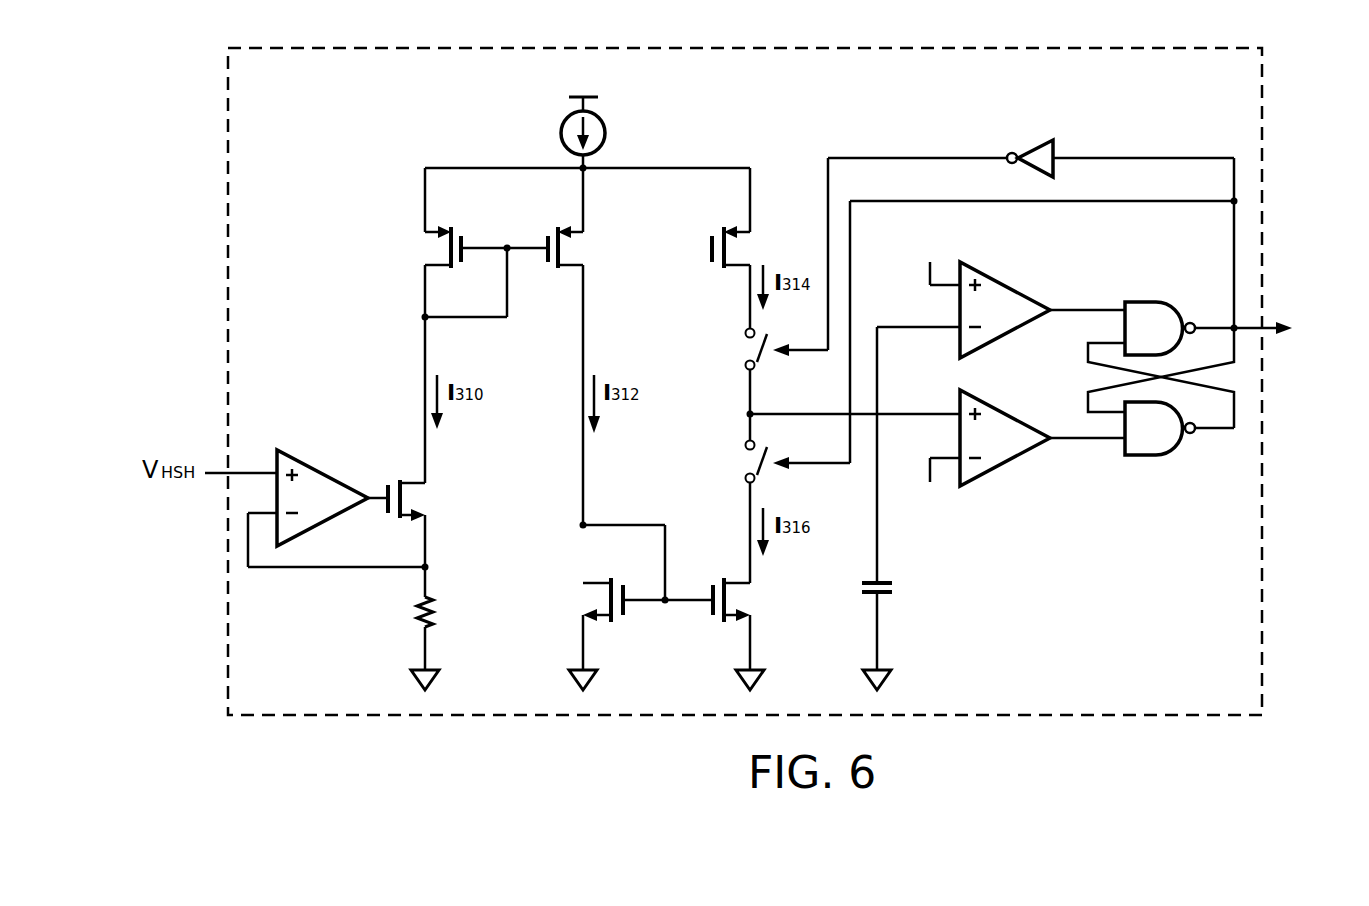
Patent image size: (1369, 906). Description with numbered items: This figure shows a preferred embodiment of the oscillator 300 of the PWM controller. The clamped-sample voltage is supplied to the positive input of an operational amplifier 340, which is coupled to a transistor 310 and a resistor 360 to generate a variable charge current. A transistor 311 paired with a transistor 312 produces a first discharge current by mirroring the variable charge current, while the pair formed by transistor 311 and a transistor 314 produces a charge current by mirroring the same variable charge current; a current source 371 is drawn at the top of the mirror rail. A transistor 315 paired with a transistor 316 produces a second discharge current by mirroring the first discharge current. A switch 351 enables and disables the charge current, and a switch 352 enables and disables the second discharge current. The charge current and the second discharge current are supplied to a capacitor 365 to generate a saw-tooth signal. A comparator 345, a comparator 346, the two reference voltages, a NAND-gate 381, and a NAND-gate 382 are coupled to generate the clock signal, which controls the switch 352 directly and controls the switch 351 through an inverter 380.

The oscillator 300 is at (1262, 120).
The transistor 310 is at (430, 497).
The transistor 311 is at (420, 250).
The transistor 312 is at (553, 272).
The transistor 314 is at (708, 272).
The transistor 315 is at (573, 607).
The transistor 316 is at (720, 623).
The operational amplifier 340 is at (313, 455).
The comparator 345 is at (1037, 264).
The comparator 346 is at (988, 482).
The switch 351 is at (742, 348).
The switch 352 is at (732, 456).
The resistor 360 is at (407, 610).
The capacitor 365 is at (898, 589).
The current source 371 is at (607, 133).
The inverter 380 is at (1033, 140).
The NAND-gate 381 is at (1148, 300).
The NAND-gate 382 is at (1150, 458).